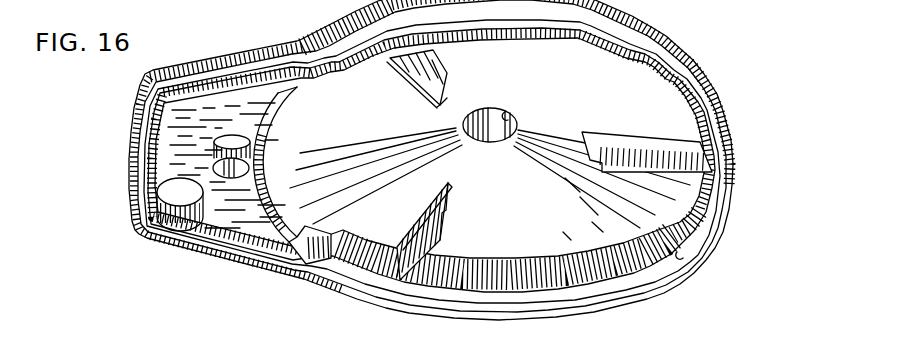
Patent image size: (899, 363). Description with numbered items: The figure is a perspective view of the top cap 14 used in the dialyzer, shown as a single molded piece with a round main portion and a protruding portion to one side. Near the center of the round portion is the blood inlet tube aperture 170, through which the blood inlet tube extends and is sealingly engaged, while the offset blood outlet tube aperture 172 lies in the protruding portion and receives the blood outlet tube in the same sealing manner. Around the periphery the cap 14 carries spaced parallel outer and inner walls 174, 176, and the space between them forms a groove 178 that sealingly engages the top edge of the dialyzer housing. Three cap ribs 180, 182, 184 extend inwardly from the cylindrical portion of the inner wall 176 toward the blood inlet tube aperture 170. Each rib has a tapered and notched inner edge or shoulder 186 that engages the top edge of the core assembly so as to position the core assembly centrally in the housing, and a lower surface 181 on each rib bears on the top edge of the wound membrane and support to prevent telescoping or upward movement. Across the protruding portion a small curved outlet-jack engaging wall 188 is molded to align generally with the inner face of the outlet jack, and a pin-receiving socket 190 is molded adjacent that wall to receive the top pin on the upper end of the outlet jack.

The top cap 14 is at (712, 55).
The blood inlet tube aperture 170 is at (512, 122).
The blood outlet tube aperture 172 is at (200, 198).
The outer wall 174 is at (725, 200).
The inner wall 176 is at (690, 236).
The groove 178 is at (681, 257).
The cap rib 180 is at (638, 174).
The lower surface 181 is at (410, 258).
The cap rib 182 is at (415, 88).
The cap rib 184 is at (448, 193).
The tapered and notched inner edge or shoulder 186 is at (441, 104).
The outlet-jack engaging wall 188 is at (298, 176).
The pin-receiving socket 190 is at (258, 111).